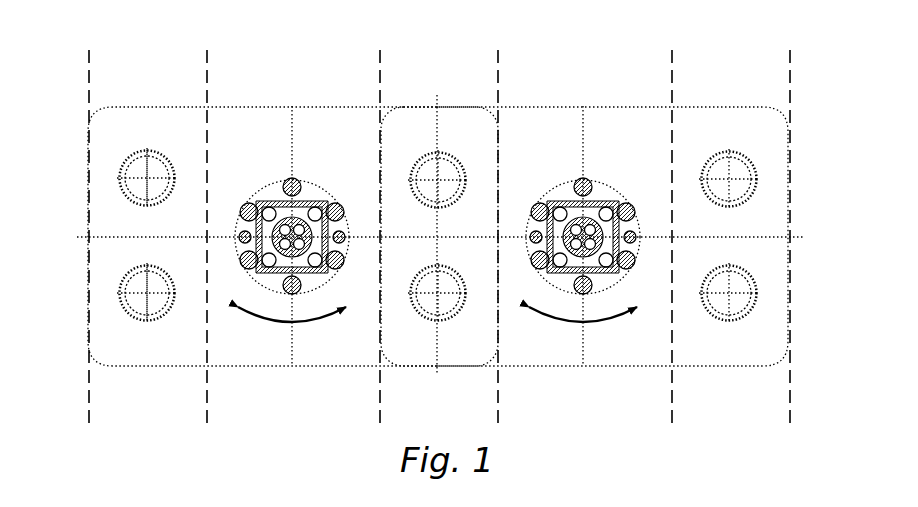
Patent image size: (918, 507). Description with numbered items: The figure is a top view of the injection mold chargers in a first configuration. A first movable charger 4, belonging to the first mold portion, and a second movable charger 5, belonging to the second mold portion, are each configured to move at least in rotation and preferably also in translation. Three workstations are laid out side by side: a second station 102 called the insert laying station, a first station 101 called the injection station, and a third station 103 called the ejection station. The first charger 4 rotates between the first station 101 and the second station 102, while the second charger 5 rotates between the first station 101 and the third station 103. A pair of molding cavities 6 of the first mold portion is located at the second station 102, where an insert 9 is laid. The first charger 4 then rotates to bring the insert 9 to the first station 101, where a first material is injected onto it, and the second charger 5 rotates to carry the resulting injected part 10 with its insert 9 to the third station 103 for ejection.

The first movable charger 4 is at (171, 384).
The second movable charger 5 is at (705, 384).
The molding cavity 6 is at (148, 178).
The insert 9 is at (120, 173).
The injected part 10 is at (759, 306).
The first station 101 is at (498, 50).
The second station 102 is at (207, 50).
The third station 103 is at (790, 50).